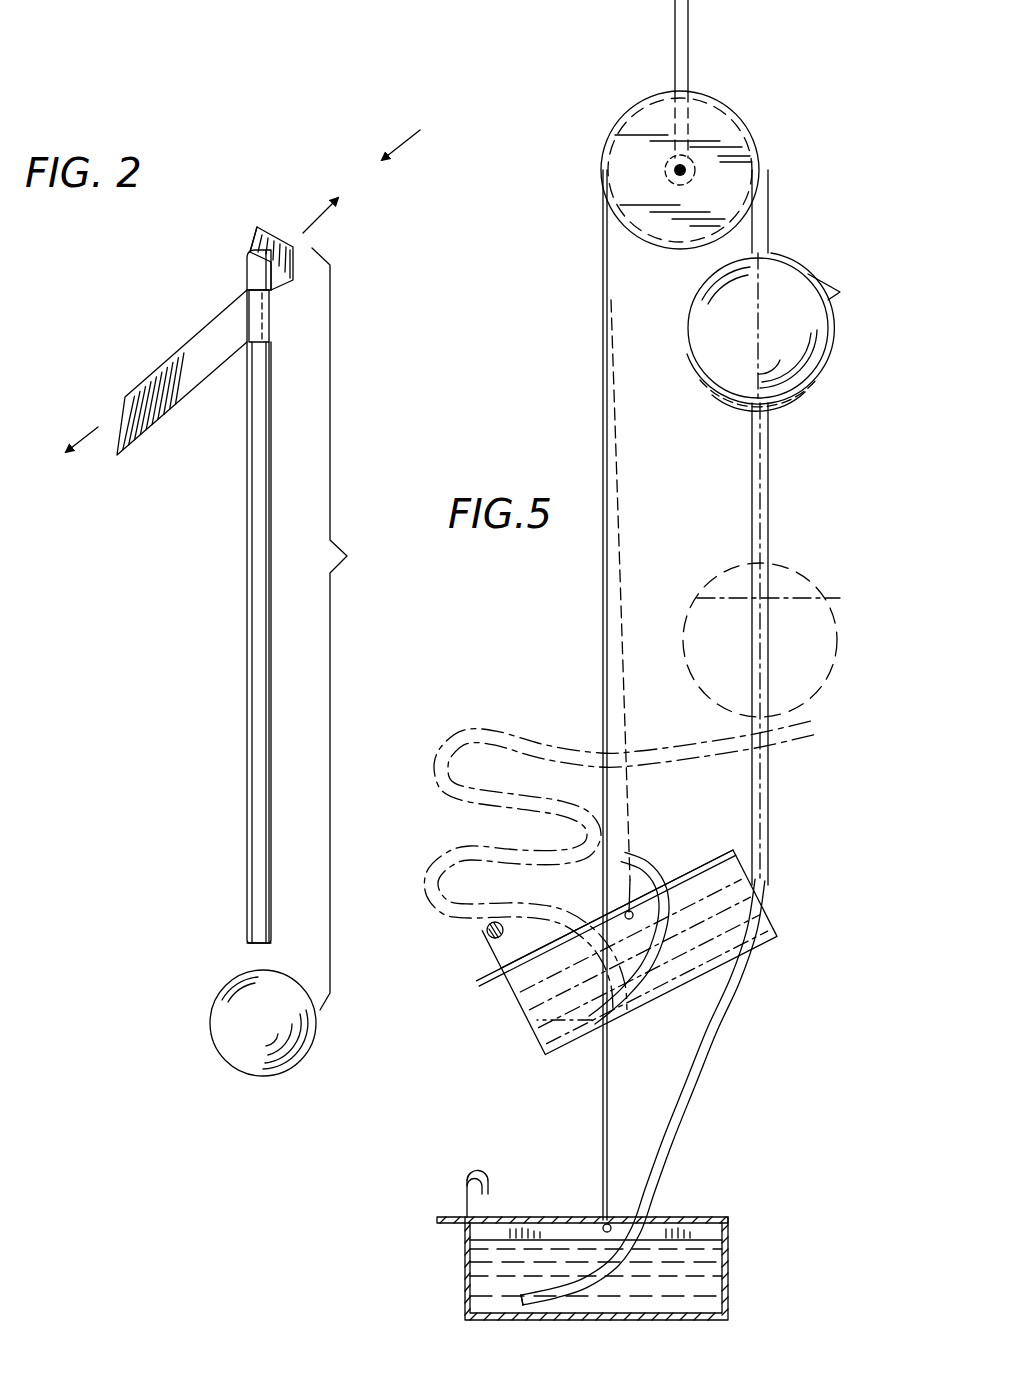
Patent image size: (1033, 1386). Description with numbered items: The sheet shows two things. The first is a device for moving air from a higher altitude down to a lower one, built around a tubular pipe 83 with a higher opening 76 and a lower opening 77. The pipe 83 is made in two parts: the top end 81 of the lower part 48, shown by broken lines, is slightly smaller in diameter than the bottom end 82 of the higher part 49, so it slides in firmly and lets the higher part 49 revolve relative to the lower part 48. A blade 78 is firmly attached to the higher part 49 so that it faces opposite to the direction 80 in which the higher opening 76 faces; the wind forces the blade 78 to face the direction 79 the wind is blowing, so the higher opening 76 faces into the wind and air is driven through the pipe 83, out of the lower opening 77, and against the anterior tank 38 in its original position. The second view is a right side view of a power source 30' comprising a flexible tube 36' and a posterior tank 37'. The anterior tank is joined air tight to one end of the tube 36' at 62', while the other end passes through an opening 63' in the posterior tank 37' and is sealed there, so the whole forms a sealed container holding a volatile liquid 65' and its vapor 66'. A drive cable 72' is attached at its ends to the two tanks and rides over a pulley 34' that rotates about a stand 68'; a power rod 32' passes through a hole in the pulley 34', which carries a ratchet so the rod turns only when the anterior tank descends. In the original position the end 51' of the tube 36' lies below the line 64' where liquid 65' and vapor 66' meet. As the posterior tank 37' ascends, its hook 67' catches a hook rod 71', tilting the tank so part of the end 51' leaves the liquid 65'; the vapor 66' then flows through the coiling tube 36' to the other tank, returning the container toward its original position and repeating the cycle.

In FIG. 2, the higher opening 76 is at (271, 242).
In FIG. 2, the higher part 49 is at (248, 257).
In FIG. 2, the pipe 83 is at (247, 278).
In FIG. 2, the top end 81 is at (268, 296).
In FIG. 2, the bottom end 82 is at (268, 328).
In FIG. 2, the blade 78 is at (146, 386).
In FIG. 2, the lower part 48 is at (247, 710).
In FIG. 2, the lower opening 77 is at (255, 946).
In FIG. 2, the anterior tank 38 is at (305, 1050).
In FIG. 2, the direction 79 is at (402, 148).
In FIG. 2, the direction 80 is at (322, 230).
In FIG. 5, the stand 68' is at (725, 79).
In FIG. 5, the pulley 34' is at (714, 165).
In FIG. 5, the power rod 32' is at (621, 184).
In FIG. 5, the drive cable 72' is at (580, 695).
In FIG. 5, the vapor 66' is at (685, 736).
In FIG. 5, the posterior tank 37' is at (684, 786).
In FIG. 5, the volatile liquid 65' is at (687, 847).
In FIG. 5, the joint 62' is at (793, 414).
In FIG. 5, the flexible tube 36' is at (808, 527).
In FIG. 5, the opening 63' is at (618, 1013).
In FIG. 5, the line 64' is at (636, 830).
In FIG. 5, the hook rod 71' is at (457, 942).
In FIG. 5, the hook 67' is at (440, 1187).
In FIG. 5, the end 51' is at (496, 1333).
In FIG. 5, the power source 30' is at (895, 683).